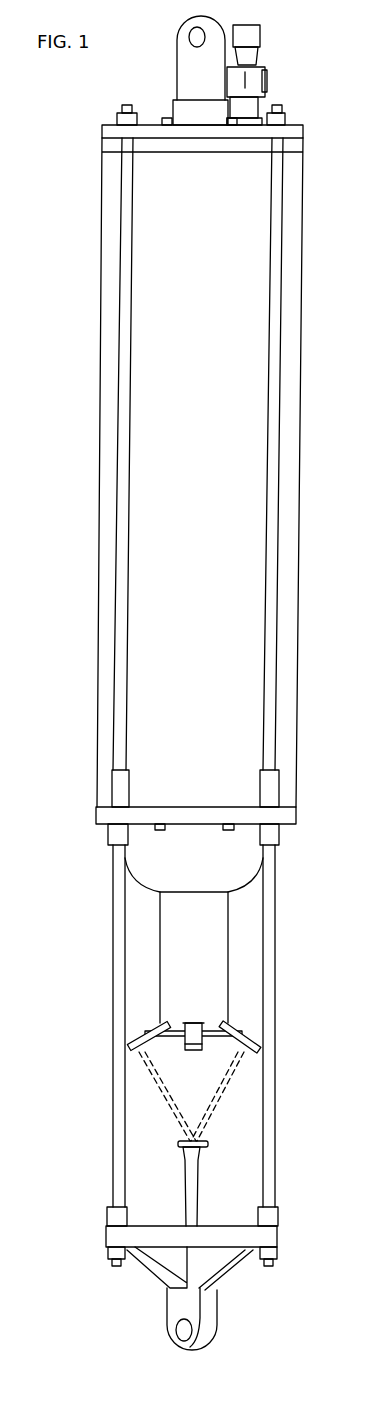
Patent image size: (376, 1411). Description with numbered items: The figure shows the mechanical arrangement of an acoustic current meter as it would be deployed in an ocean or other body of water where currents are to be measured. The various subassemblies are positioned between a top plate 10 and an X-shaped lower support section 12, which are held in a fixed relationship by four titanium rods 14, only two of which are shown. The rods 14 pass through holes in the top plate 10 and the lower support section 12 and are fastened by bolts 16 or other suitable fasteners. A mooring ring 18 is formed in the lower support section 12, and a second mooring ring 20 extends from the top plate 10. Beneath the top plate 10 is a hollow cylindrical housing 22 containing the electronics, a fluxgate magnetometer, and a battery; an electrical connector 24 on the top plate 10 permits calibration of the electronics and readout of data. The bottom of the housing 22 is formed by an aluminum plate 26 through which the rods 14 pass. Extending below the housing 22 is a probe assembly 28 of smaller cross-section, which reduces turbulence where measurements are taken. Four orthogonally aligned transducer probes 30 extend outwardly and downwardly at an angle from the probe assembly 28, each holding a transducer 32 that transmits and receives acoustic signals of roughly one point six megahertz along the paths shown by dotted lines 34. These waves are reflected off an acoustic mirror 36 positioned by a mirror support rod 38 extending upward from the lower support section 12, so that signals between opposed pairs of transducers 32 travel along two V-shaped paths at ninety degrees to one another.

The top plate 10 is at (102, 132).
The X-shaped lower support section 12 is at (213, 1262).
The titanium rods 14 is at (113, 907).
The bolts 16 is at (117, 110).
The mooring ring 18 is at (167, 1336).
The second mooring ring 20 is at (177, 27).
The hollow cylindrical housing 22 is at (100, 268).
The electrical connector 24 is at (260, 31).
The aluminum plate 26 is at (96, 811).
The probe assembly 28 is at (106, 958).
The transducer probes 30 is at (140, 1030).
The transducer 32 is at (195, 1053).
The dotted lines 34 is at (138, 1073).
The acoustic mirror 36 is at (180, 1143).
The mirror support rod 38 is at (200, 1185).